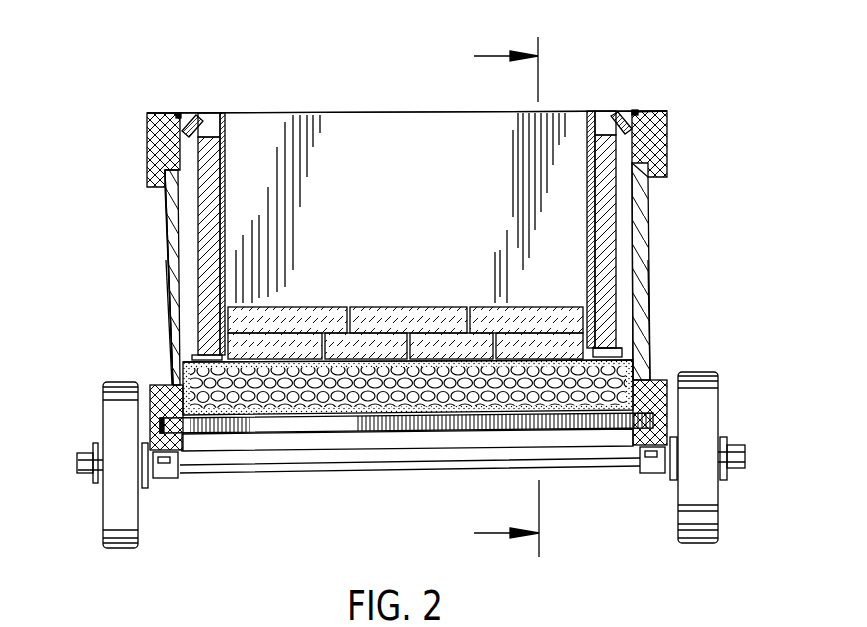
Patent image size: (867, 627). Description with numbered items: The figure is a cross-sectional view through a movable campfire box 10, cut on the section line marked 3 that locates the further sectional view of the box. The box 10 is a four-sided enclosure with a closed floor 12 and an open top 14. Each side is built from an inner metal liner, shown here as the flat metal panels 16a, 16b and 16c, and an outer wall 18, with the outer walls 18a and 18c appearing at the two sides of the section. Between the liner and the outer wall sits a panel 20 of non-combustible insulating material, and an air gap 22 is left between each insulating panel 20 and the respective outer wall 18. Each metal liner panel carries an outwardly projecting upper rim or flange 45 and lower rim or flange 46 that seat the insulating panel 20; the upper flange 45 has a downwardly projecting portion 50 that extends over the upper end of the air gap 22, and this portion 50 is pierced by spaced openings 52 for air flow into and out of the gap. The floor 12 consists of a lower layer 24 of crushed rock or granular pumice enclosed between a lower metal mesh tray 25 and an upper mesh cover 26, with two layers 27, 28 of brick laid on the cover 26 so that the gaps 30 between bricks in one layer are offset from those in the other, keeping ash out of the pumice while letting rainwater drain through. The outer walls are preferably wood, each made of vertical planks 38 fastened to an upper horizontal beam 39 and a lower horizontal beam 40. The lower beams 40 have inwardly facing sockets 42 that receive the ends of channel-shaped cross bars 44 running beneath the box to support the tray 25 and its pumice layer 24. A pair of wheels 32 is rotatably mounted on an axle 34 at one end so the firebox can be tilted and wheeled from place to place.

The movable campfire box 10 is at (273, 90).
The floor 12 is at (517, 282).
The open top 14 is at (390, 112).
The metal panel or liner 16a is at (225, 223).
The metal panel or liner 16b is at (333, 118).
The metal panel or liner 16c is at (585, 220).
The outer wall 18 is at (140, 247).
The outer wall 18a is at (167, 295).
The outer wall 18c is at (647, 284).
The insulating panel 20 is at (198, 207).
The air gap 22 is at (187, 263).
The lower layer of insulating material 24 is at (465, 415).
The metal mesh panel or tray 25 is at (445, 410).
The metal mesh panel or cover 26 is at (513, 360).
The layer of brick 27 is at (335, 342).
The layer of brick 28 is at (337, 317).
The gaps between bricks 30 is at (463, 307).
The wheels 32 is at (115, 510).
The axle 34 is at (280, 465).
The vertical planks 38 is at (170, 198).
The upper horizontal beam 39 is at (157, 135).
The lower horizontal beam 40 is at (152, 385).
The slots or sockets 42 is at (160, 423).
The cross bars 44 is at (320, 425).
The upper rim or flange 45 is at (605, 112).
The lower rim or flange 46 is at (620, 352).
The downwardly projecting portion 50 is at (180, 117).
The openings 52 is at (195, 118).
The section line 3- 3 is at (495, 297).